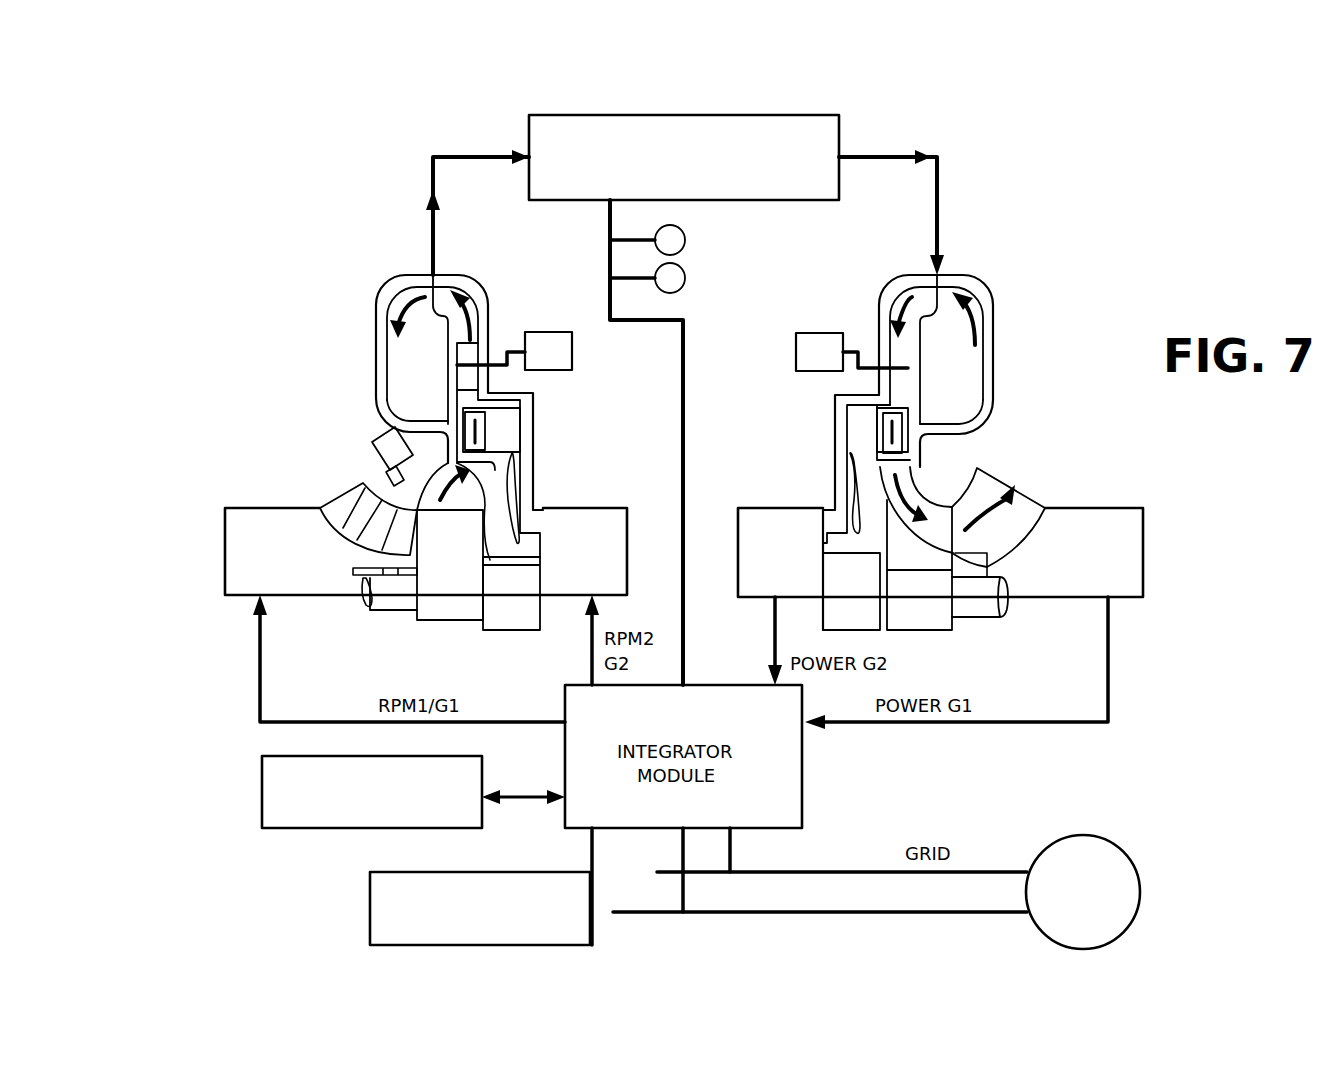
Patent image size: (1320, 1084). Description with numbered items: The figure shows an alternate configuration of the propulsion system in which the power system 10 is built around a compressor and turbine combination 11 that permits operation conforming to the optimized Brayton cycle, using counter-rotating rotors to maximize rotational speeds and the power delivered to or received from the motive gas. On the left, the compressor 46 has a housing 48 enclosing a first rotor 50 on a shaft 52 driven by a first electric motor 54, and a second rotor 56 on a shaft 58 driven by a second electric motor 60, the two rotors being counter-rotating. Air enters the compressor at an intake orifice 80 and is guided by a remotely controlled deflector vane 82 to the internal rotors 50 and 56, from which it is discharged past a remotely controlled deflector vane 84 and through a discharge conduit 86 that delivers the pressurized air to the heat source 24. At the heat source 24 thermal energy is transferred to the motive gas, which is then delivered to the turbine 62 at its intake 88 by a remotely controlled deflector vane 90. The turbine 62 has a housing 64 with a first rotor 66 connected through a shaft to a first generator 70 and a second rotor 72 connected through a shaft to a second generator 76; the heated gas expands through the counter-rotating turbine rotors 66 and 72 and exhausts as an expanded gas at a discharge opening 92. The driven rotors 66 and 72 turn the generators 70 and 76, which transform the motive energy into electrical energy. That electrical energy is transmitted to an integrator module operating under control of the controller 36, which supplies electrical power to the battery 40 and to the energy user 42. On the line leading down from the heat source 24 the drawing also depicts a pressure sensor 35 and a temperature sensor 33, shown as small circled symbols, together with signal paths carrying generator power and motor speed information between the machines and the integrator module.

The power system 10 is at (981, 245).
The compressor and turbine combination 11 is at (457, 277).
The heat source 24 is at (843, 145).
The temperature sensor 33 is at (688, 283).
The pressure sensor 35 is at (688, 244).
The controller 36 is at (370, 890).
The battery 40 is at (262, 775).
The energy user 42 is at (1132, 868).
The compressor 46 is at (376, 307).
The housing 48 is at (376, 357).
The first rotor 50 is at (435, 540).
The shaft 52 is at (387, 605).
The first electric motor 54 is at (252, 508).
The second rotor 56 is at (505, 433).
The shaft 58 is at (497, 617).
The second electric motor 60 is at (590, 508).
The turbine 62 is at (988, 296).
The housing 64 is at (995, 386).
The first rotor 66 is at (855, 433).
The first generator 70 is at (787, 508).
The second rotor 72 is at (953, 513).
The second generator 76 is at (1143, 525).
The intake orifice 80 is at (335, 500).
The remotely controlled deflector vane 82 is at (370, 508).
The remotely controlled deflector vane 84 is at (480, 340).
The discharge conduit 86 is at (413, 298).
The intake 88 is at (985, 345).
The remotely controlled deflector vane 90 is at (810, 333).
The discharge opening 92 is at (1017, 533).